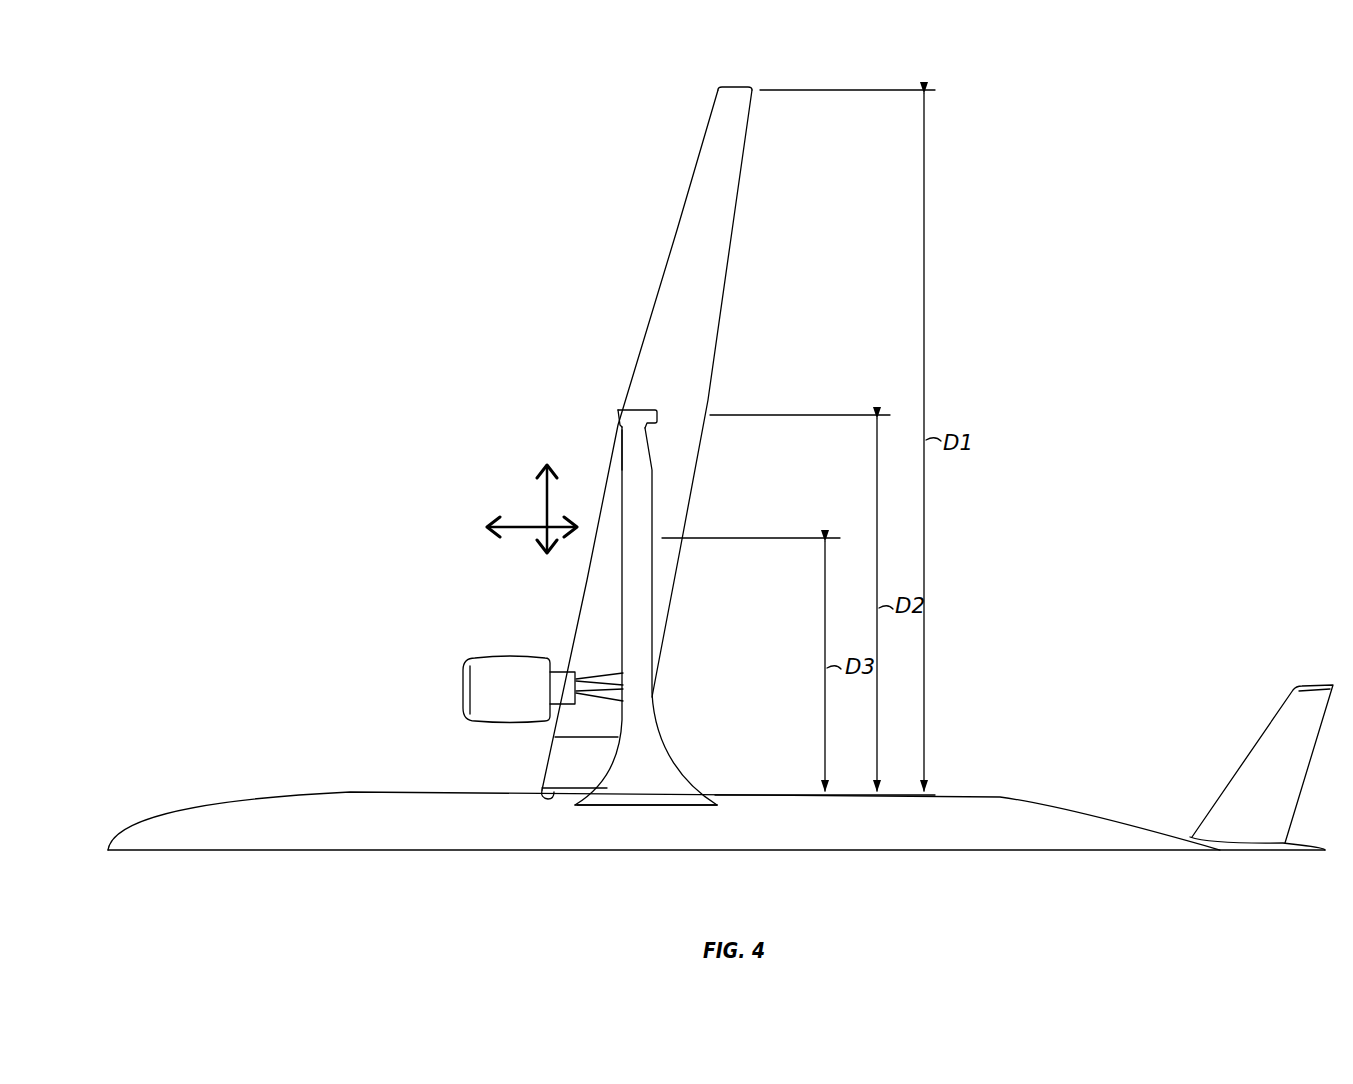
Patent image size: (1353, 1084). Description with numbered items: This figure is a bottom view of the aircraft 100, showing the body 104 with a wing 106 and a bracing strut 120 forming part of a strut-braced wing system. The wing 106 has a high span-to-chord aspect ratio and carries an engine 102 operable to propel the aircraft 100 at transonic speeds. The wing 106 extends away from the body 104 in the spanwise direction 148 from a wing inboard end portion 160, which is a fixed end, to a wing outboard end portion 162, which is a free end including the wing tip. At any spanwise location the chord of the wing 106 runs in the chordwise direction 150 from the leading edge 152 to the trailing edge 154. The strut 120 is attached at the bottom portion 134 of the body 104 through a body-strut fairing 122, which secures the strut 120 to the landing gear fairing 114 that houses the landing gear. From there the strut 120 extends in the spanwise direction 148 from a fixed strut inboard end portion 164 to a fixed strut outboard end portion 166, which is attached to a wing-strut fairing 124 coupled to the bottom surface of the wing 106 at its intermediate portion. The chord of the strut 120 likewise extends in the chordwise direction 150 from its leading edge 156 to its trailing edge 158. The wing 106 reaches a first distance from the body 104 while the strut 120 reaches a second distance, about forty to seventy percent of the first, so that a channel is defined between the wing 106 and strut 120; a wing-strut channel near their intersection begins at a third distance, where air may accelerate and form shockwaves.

The aircraft 100 is at (700, 801).
The engine 102 is at (477, 708).
The body 104 is at (241, 795).
The wing 106 is at (675, 414).
The landing gear fairing 114 is at (702, 826).
The strut 120 is at (603, 651).
The body-strut fairing 122 is at (653, 797).
The wing-strut fairing 124 is at (617, 412).
The bottom portion of the body 134 is at (510, 840).
The spanwise direction 148 is at (545, 490).
The chordwise direction 150 is at (523, 529).
The leading edge of the wing 152 is at (700, 150).
The trailing edge of the wing 154 is at (743, 162).
The leading edge of the strut 156 is at (621, 636).
The trailing edge of the strut 158 is at (653, 612).
The wing inboard end portion 160 is at (541, 795).
The wing outboard end portion 162 is at (734, 88).
The strut inboard end portion 164 is at (623, 786).
The strut outboard end portion 166 is at (630, 450).